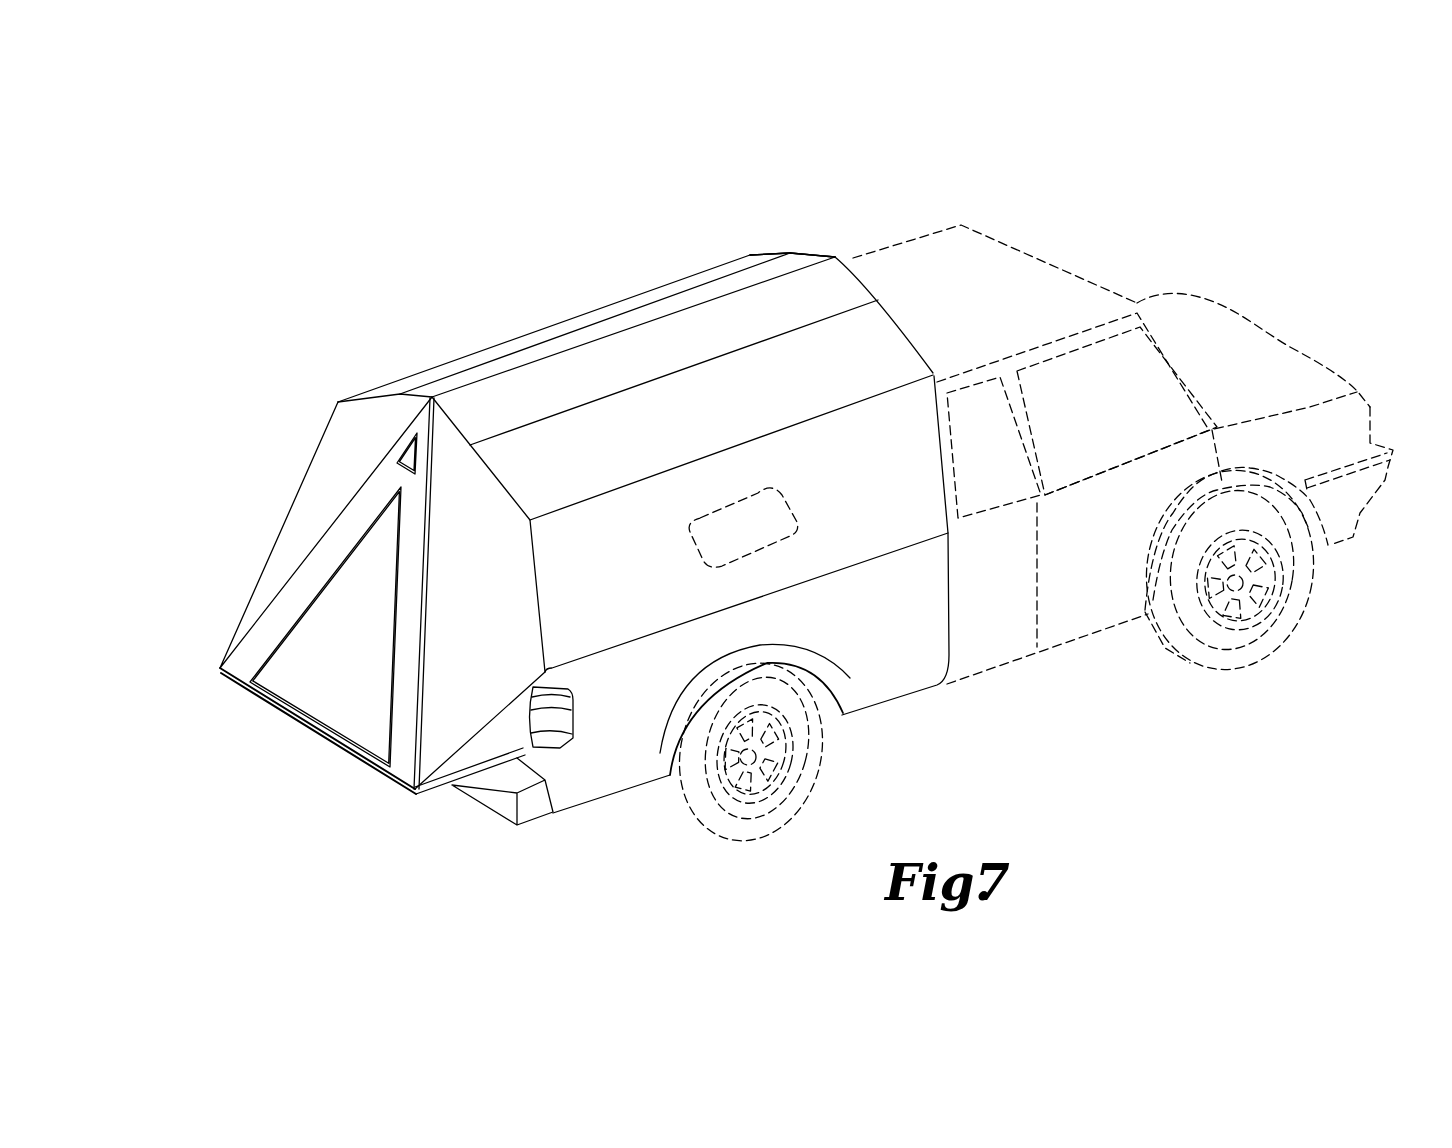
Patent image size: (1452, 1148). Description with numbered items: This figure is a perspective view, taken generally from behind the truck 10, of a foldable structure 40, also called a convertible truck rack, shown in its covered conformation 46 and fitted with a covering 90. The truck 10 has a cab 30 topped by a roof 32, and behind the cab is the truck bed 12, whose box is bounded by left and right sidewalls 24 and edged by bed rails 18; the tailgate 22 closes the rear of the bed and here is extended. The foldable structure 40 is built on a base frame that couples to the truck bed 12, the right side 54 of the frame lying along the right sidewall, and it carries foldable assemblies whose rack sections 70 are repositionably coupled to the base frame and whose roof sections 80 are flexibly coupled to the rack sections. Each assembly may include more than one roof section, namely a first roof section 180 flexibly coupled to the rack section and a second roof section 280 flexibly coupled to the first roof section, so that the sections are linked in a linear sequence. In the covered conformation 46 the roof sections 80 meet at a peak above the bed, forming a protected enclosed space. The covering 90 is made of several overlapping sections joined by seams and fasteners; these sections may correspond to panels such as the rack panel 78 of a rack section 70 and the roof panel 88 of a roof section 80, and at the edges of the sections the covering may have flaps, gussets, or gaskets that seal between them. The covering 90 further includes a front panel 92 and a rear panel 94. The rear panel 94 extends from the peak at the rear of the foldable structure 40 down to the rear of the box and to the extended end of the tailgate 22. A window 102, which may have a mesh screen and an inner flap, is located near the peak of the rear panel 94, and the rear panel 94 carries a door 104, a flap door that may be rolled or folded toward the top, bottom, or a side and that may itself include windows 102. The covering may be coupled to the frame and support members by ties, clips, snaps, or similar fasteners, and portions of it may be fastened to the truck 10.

The truck 10 is at (458, 153).
The truck bed 12 is at (930, 690).
The bed rails 18 is at (817, 578).
The tailgate 22 is at (418, 795).
The sidewalls 24 is at (900, 670).
The cab 30 is at (1287, 340).
The roof 32 is at (1065, 265).
The foldable structure 40 is at (445, 190).
The covered conformation 46 is at (455, 242).
The right side 54 is at (615, 655).
The rack section 70 is at (948, 482).
The rack panel 78 is at (870, 520).
The roof section 80 is at (750, 255).
The roof panel 88 is at (975, 403).
The covering 90 is at (405, 373).
The front panel 92 is at (822, 255).
The rear panel 94 is at (300, 512).
The windows 102 is at (400, 446).
The door 104 is at (300, 600).
The first roof section 180 is at (762, 250).
The second roof section 280 is at (770, 253).